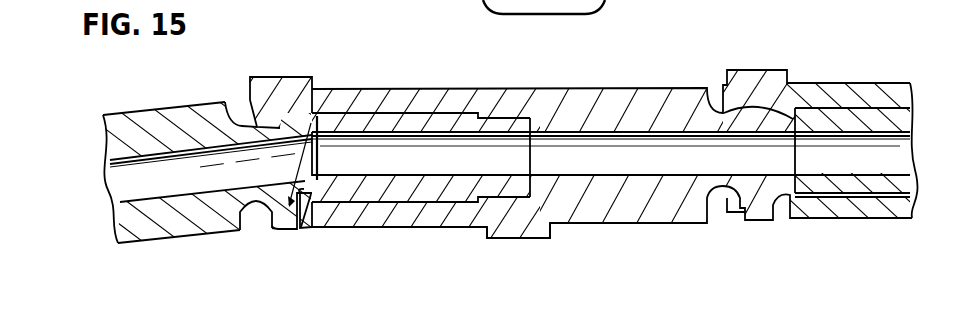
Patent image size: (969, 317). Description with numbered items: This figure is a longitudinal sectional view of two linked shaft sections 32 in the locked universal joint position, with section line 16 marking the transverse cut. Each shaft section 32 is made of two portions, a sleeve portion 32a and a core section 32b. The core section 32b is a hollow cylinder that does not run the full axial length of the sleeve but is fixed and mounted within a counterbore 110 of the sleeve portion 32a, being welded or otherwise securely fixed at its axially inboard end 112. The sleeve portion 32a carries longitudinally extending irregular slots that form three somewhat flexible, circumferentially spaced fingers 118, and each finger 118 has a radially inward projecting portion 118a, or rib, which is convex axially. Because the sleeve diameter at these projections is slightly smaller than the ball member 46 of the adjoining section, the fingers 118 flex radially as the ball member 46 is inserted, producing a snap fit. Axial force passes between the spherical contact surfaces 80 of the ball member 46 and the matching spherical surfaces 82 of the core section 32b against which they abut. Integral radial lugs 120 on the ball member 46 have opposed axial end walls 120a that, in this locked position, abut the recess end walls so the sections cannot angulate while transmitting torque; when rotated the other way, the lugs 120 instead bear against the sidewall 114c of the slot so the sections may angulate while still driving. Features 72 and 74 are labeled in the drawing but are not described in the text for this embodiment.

The shaft section 32 is at (135, 108).
The sleeve portion 32a is at (342, 102).
The core section 32b is at (422, 125).
The ball member 46 is at (245, 126).
The cable core 72 is at (583, 137).
The stop lug 74 is at (538, 231).
The spherical contact surface 80 is at (306, 129).
The spherical surface 82 is at (312, 212).
The counterbore 110 is at (508, 119).
The axially inboard end 112 is at (535, 122).
The sidewall 114c is at (258, 210).
The finger 118 is at (294, 100).
The radially inward projecting portion 118a is at (272, 128).
The lug 120 is at (319, 150).
The axial end wall 120a is at (291, 230).
The section line 16 is at (718, 32).